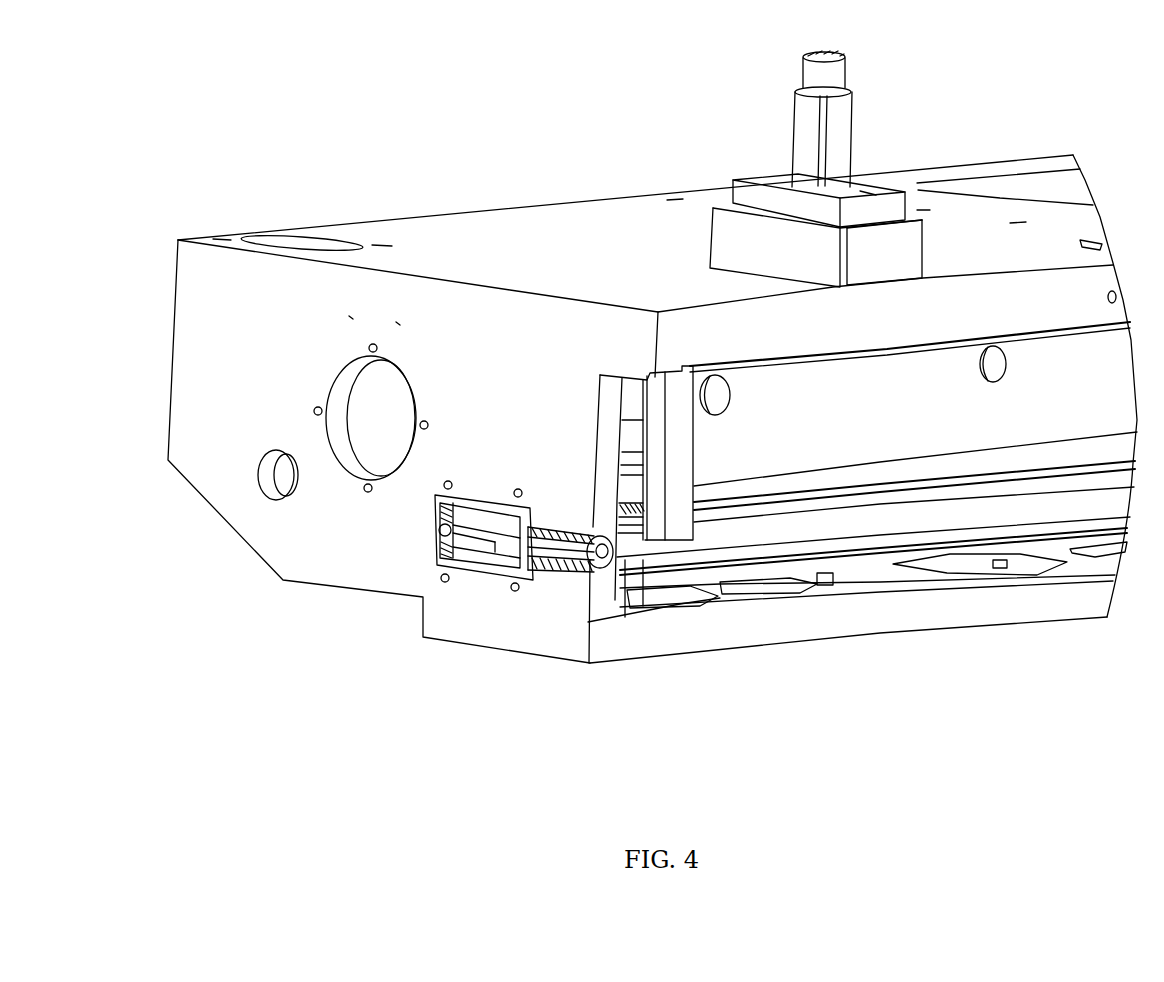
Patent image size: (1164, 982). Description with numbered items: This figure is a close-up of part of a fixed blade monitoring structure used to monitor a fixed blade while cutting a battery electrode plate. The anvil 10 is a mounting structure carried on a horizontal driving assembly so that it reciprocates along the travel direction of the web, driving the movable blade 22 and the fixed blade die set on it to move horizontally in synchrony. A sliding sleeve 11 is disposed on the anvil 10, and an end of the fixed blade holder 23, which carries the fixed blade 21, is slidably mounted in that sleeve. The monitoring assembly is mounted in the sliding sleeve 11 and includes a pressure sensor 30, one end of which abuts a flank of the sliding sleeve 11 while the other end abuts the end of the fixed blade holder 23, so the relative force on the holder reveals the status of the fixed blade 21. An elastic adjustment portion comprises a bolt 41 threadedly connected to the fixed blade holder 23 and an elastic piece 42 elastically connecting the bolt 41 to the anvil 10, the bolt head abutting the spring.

The anvil 10 is at (652, 357).
The sliding sleeve 11 is at (483, 577).
The fixed blade 21 is at (787, 527).
The movable blade 22 is at (975, 425).
The fixed blade holder 23 is at (717, 560).
The pressure sensor 30 is at (484, 640).
The bolt 41 is at (530, 538).
The elastic piece 42 is at (613, 575).